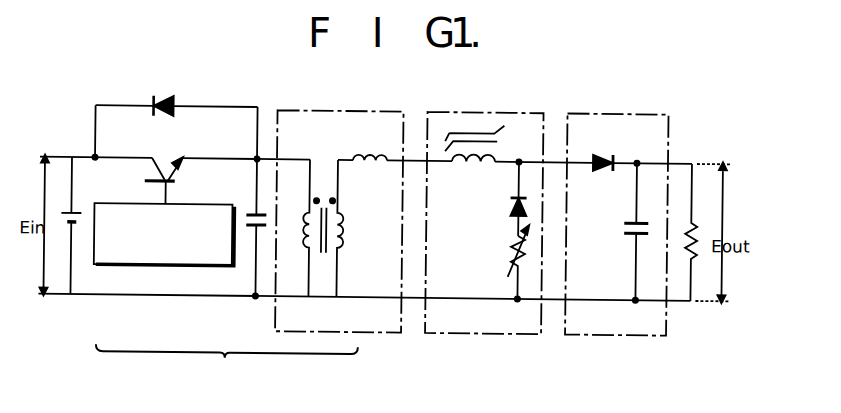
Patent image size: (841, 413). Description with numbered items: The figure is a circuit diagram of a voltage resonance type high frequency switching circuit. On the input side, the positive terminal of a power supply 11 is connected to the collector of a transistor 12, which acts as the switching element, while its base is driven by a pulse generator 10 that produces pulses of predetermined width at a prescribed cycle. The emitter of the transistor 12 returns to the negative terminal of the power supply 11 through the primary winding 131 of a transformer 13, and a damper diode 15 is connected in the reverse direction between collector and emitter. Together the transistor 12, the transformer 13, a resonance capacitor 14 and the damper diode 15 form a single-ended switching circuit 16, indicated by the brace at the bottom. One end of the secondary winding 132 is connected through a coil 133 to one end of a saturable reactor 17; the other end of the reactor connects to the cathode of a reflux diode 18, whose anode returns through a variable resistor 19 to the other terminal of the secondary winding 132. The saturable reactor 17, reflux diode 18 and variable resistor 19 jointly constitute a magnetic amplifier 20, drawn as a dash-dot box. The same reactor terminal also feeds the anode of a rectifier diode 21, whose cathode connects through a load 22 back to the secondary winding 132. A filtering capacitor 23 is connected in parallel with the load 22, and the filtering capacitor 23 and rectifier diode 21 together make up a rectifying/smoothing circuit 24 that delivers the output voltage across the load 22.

The pulse generator 10 is at (103, 266).
The power supply 11 is at (82, 212).
The transistor 12 is at (146, 174).
The transformer 13 is at (352, 110).
The primary winding 131 is at (304, 216).
The secondary winding 132 is at (346, 230).
The coil 133 is at (372, 166).
The resonance capacitor 14 is at (250, 213).
The damper diode 15 is at (162, 97).
The single-ended switching circuit 16 is at (226, 366).
The saturable reactor 17 is at (469, 167).
The reflux diode 18 is at (511, 215).
The variable resistor 19 is at (510, 262).
The magnetic amplifier 20 is at (515, 110).
The rectifier diode 21 is at (604, 169).
The load 22 is at (690, 242).
The filtering capacitor 23 is at (625, 224).
The rectifying/smoothing circuit 24 is at (638, 111).